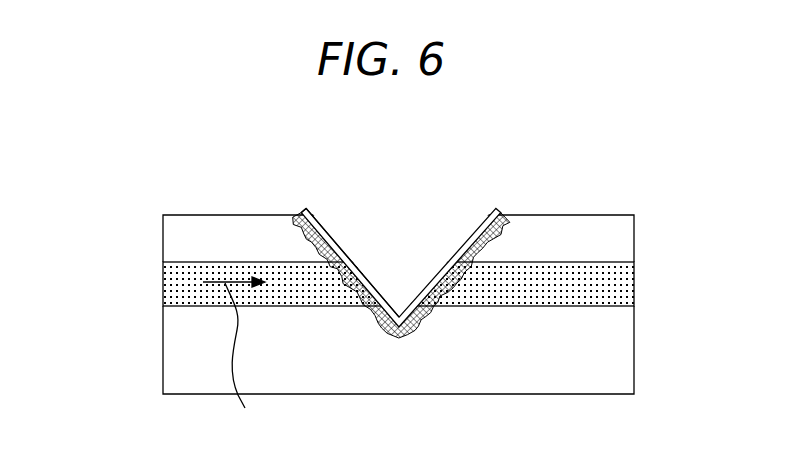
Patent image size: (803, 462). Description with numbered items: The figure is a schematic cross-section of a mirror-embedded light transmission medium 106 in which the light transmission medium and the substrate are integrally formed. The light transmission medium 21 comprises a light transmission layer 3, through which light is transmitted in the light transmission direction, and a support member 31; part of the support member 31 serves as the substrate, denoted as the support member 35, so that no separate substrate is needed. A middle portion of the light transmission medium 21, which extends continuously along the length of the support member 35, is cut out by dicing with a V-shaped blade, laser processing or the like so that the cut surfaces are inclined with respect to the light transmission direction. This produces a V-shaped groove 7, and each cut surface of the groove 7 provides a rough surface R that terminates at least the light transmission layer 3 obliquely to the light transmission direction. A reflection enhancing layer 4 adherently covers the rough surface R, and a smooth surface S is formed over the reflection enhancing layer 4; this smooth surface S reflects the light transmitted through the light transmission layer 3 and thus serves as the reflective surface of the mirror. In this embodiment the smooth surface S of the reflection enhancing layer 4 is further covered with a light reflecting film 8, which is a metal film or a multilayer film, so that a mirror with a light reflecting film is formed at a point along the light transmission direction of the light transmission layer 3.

The mirror-embedded light transmission medium 106 is at (145, 169).
The light transmission medium 21 is at (102, 214).
The support member 31 is at (163, 237).
The light transmission layer 3 is at (163, 281).
The support member 35 is at (163, 346).
The V-shaped groove 7 is at (410, 240).
The light reflecting film 8 is at (334, 238).
The reflection enhancing layer 4 is at (300, 217).
The smooth surface S is at (307, 216).
The rough surface R is at (297, 219).